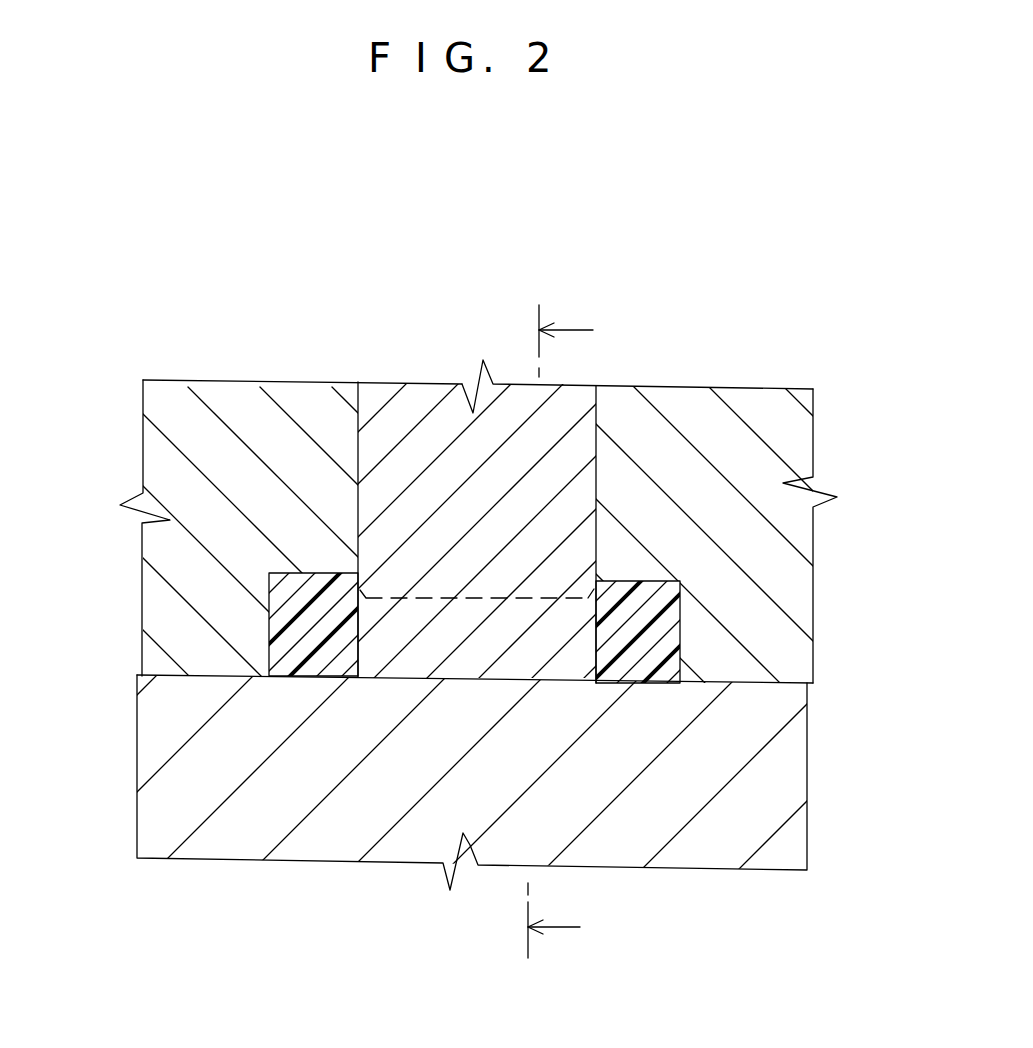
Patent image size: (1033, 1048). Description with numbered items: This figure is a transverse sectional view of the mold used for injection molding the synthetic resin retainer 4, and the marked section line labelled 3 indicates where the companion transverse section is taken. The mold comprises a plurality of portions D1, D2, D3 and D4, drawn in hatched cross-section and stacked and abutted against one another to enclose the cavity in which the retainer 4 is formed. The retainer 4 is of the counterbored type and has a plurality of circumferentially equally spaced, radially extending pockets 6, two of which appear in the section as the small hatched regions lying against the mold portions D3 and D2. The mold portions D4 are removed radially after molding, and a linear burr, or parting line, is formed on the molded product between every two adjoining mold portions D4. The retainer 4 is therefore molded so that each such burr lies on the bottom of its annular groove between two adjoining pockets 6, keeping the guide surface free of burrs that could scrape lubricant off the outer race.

The mold portion D1 is at (783, 760).
The mold portion D2 is at (758, 408).
The mold portion D3 is at (235, 398).
The mold portion D4 is at (420, 398).
The retainer 4 is at (277, 625).
The pocket 6 is at (593, 641).
The section line for FIG. 3 is at (548, 631).